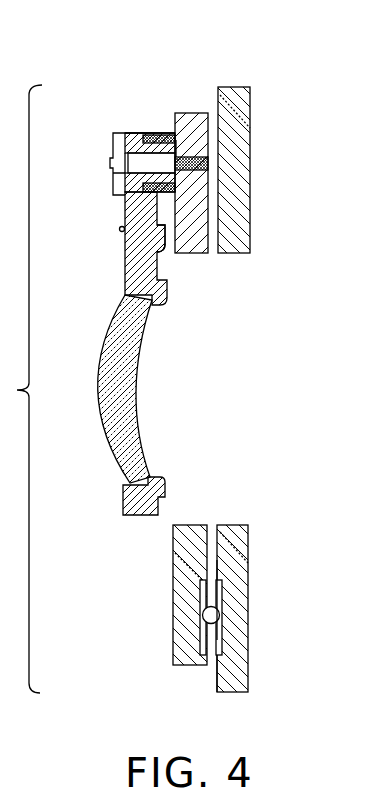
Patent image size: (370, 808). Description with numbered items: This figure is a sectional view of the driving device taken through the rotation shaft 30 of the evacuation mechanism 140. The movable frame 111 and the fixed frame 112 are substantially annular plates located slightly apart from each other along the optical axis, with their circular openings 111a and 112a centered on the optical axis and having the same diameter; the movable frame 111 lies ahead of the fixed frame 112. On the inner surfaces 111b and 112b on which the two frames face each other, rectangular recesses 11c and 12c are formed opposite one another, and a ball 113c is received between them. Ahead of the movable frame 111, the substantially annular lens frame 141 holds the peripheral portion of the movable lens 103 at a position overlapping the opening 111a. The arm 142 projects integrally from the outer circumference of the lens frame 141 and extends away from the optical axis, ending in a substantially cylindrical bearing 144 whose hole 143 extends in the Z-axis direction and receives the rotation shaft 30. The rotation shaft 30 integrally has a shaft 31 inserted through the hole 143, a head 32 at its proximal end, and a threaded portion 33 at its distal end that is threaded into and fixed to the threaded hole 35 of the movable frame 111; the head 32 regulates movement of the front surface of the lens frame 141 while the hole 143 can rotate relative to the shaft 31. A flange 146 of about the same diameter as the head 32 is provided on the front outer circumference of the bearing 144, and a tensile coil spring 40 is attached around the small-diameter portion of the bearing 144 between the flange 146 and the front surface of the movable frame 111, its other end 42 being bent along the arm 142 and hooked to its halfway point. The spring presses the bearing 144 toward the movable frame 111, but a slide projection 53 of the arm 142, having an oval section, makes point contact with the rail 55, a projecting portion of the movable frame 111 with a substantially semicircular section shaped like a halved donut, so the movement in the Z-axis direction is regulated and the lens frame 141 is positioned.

The evacuation mechanism 140 is at (157, 83).
The bearing 144 is at (147, 128).
The flange 146 is at (134, 133).
The tensile coil spring 40 is at (160, 135).
The threaded portion 33 is at (189, 150).
The rotation shaft 30 is at (110, 131).
The threaded hole 35 is at (209, 171).
The hole 143 is at (120, 160).
The shaft 31 is at (131, 177).
The head 32 is at (138, 188).
The other end 42 is at (119, 229).
The slide projection 53 is at (158, 256).
The arm 142 is at (127, 277).
The rail 55 is at (169, 242).
The opening 111a is at (198, 256).
The opening 112a is at (237, 254).
The movable lens 103 is at (108, 413).
The lens frame 141 is at (123, 497).
The movable frame 111 is at (185, 565).
The ball 113c is at (208, 615).
The recess 11c is at (205, 640).
The recess 12c is at (215, 592).
The inner surface 111b is at (220, 628).
The fixed frame 112 is at (247, 643).
The inner surface 112b is at (215, 673).